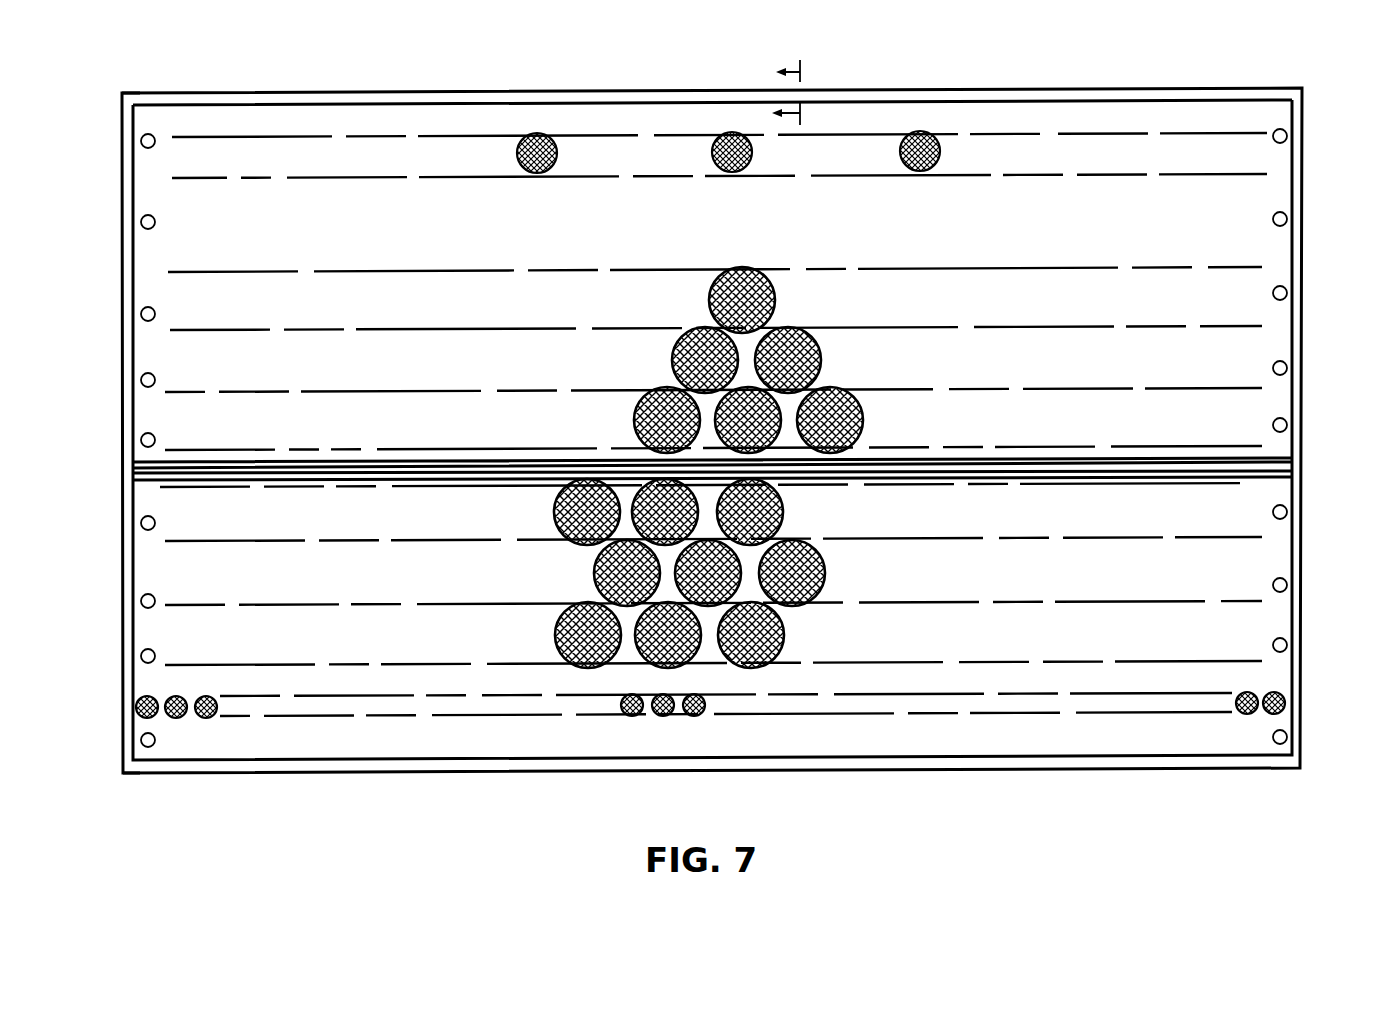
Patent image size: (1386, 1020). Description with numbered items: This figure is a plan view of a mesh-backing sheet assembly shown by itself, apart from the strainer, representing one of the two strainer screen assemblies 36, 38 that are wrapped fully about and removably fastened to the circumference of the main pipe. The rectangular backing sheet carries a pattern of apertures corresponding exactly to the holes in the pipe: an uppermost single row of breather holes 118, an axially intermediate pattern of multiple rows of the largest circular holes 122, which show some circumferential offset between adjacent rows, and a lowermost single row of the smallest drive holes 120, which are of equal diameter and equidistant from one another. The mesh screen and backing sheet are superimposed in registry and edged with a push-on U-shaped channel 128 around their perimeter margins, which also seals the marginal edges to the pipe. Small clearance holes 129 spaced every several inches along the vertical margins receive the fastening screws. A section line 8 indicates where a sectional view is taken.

The section line 8 is at (800, 91).
The strainer screen assembly 36 is at (126, 93).
The strainer screen assembly 38 is at (123, 773).
The breather holes 118 is at (941, 151).
The drive holes 120 is at (697, 715).
The holes 122 is at (744, 467).
The push-on U-shaped channel 128 is at (900, 95).
The clearance holes 129 is at (1288, 137).